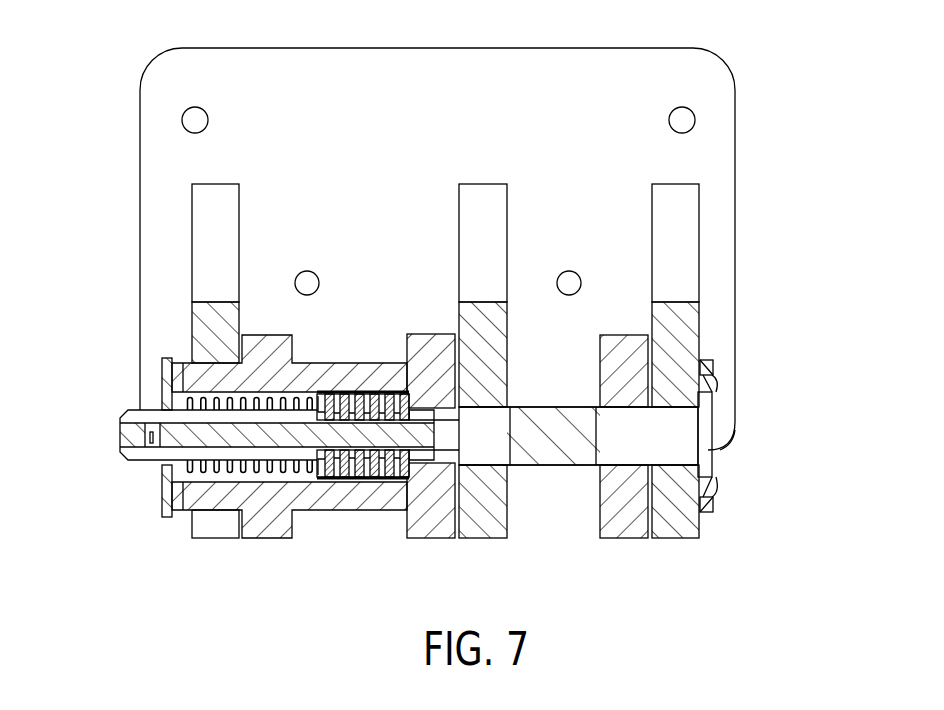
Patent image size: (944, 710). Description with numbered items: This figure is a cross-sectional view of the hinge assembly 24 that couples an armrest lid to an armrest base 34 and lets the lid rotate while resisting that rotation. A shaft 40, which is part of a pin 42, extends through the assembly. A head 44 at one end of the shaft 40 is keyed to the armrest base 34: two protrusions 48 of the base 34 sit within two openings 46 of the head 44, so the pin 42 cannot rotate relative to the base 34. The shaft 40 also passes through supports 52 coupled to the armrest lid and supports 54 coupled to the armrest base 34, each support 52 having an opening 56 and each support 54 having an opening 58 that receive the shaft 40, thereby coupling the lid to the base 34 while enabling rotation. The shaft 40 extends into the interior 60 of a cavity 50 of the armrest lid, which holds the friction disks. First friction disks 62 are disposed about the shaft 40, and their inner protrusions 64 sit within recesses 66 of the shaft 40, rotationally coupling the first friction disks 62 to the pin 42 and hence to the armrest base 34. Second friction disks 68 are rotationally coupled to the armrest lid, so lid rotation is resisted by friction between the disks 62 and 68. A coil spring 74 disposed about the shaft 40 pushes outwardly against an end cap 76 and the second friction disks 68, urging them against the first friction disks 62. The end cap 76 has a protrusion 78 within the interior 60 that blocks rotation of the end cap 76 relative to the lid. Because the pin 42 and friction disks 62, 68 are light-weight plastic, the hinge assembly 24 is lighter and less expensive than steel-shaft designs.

The hinge assembly 24 is at (772, 426).
The armrest base 34 is at (737, 162).
The shaft 40 is at (541, 405).
The pin 42 is at (547, 495).
The head 44 is at (713, 417).
The openings 46 is at (717, 373).
The protrusions 48 is at (718, 383).
The cavity 50 is at (318, 510).
The supports 52 is at (622, 335).
The supports 54 is at (483, 540).
The opening 56 is at (617, 410).
The opening 58 is at (496, 413).
The interior 60 is at (303, 395).
The first friction disk 62 is at (404, 392).
The inner protrusions 64 is at (395, 450).
The recesses 66 is at (282, 415).
The second friction disk 68 is at (404, 478).
The coil spring 74 is at (208, 473).
The end cap 76 is at (168, 372).
The protrusion 78 is at (183, 397).